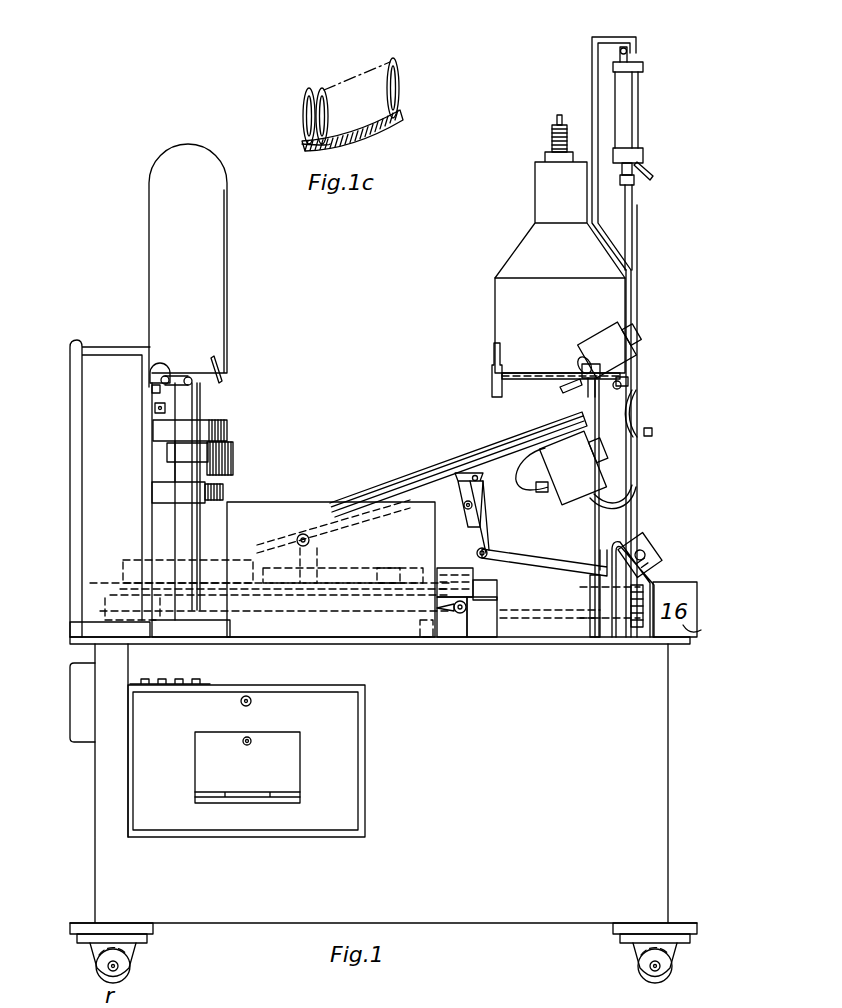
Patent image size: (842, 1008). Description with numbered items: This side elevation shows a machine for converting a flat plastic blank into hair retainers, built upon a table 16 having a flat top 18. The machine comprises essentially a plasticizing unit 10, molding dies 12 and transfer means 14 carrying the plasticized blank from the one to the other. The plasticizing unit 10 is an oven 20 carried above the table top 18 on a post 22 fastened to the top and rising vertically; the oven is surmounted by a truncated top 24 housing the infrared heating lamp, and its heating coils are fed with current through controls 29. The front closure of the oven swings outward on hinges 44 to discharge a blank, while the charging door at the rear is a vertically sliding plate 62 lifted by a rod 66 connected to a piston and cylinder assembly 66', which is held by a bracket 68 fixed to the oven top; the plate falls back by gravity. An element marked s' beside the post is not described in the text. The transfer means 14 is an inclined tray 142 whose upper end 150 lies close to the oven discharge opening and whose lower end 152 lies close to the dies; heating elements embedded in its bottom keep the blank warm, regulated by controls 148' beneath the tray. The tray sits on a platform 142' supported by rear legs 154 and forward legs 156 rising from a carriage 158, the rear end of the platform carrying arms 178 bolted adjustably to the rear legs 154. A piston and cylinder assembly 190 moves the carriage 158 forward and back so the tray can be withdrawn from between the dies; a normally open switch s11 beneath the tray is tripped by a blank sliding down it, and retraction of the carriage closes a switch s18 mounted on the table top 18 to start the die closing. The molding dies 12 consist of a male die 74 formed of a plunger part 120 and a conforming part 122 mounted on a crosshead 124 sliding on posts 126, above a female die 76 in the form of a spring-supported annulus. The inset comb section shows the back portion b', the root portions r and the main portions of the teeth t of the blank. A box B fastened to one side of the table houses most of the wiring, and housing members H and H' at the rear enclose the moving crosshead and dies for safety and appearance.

In FIG. 1, the bracket 68 is at (592, 72).
In FIG. 1, the piston and cylinder assembly 66' is at (652, 105).
In FIG. 1, the rod 66 is at (649, 216).
In FIG. 1, the plasticizing unit 10 is at (505, 234).
In FIG. 1, the truncated top 24 is at (510, 258).
In FIG. 1, the oven 20 is at (492, 300).
In FIG. 1, the hinges 44 is at (492, 357).
In FIG. 1, the vertically sliding plate 62 is at (634, 306).
In FIG. 1, the controls 29 is at (606, 347).
In FIG. 1, the switch s' is at (648, 416).
In FIG. 1, the controls 148' is at (612, 466).
In FIG. 1, the post 22 is at (627, 521).
In FIG. 1, the upper end of the tray 150 is at (578, 416).
In FIG. 1, the inclined tray 142 is at (458, 466).
In FIG. 1, the platform 142' is at (443, 442).
In FIG. 1, the transfer means 14 is at (378, 480).
In FIG. 1, the arms 178 is at (485, 523).
In FIG. 1, the rear legs 154 is at (497, 556).
In FIG. 1, the piston and cylinder assembly 190 is at (512, 600).
In FIG. 1, the flat top 18 is at (676, 642).
In FIG. 1, the table 16 is at (654, 720).
In FIG. 1, the normally open switch s18 is at (441, 634).
In FIG. 1, the box B is at (365, 742).
In FIG. 1, the housing member H is at (205, 265).
In FIG. 1, the housing member H' is at (110, 464).
In FIG. 1, the molding dies 12 is at (232, 418).
In FIG. 1, the crosshead 124 is at (232, 426).
In FIG. 1, the conforming member 122 is at (237, 450).
In FIG. 1, the male die 74 is at (243, 475).
In FIG. 1, the lower end of the tray 152 is at (269, 521).
In FIG. 1, the plunger 120 is at (155, 493).
In FIG. 1, the female die 76 is at (158, 560).
In FIG. 1, the posts 126 is at (194, 542).
In FIG. 1, the normally open switch s11 is at (341, 541).
In FIG. 1, the forward legs 156 is at (331, 562).
In FIG. 1, the carriage 158 is at (371, 561).
In FIG. 1c, the teeth t is at (303, 109).
In FIG. 1c, the back portion b' is at (366, 124).
In FIG. 1c, the root portions r is at (302, 143).